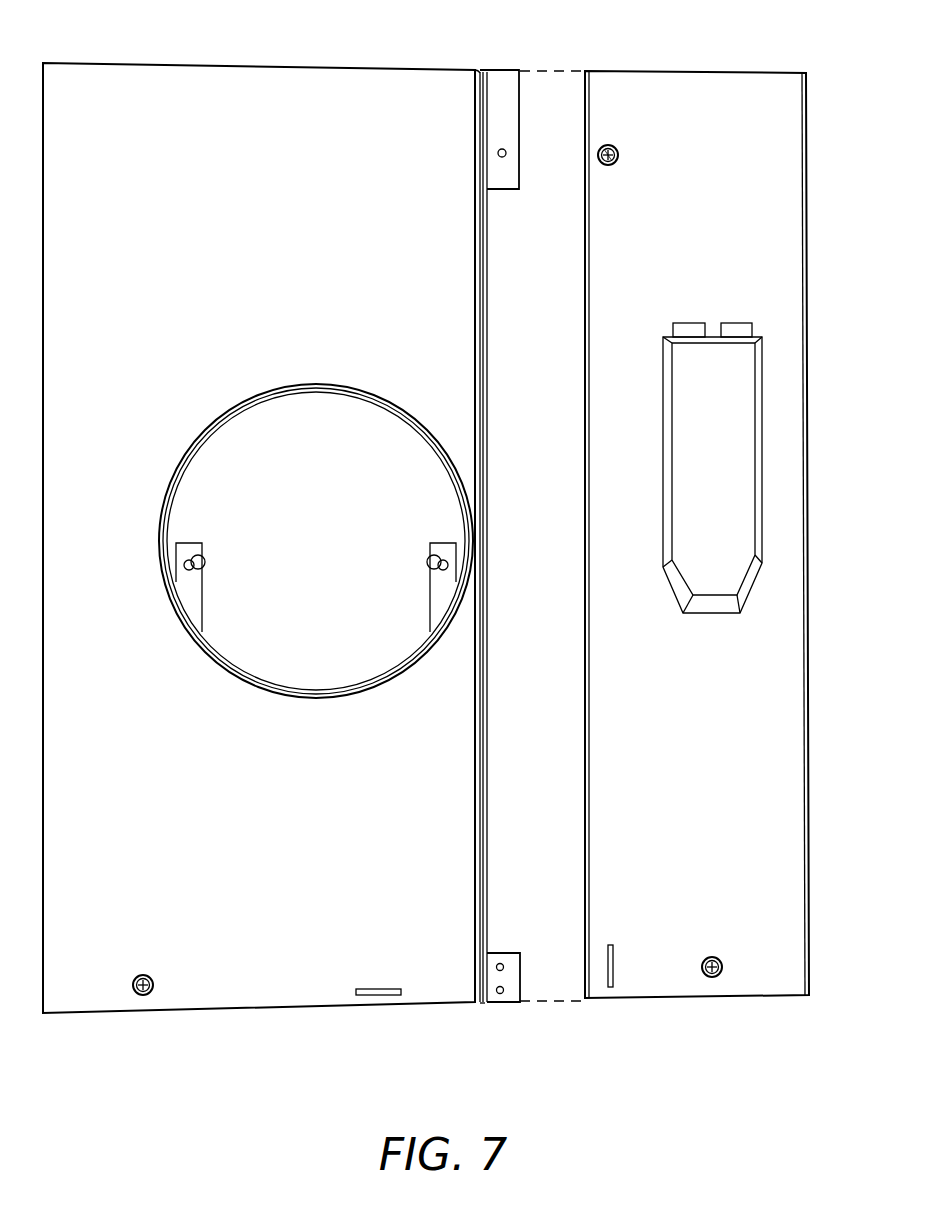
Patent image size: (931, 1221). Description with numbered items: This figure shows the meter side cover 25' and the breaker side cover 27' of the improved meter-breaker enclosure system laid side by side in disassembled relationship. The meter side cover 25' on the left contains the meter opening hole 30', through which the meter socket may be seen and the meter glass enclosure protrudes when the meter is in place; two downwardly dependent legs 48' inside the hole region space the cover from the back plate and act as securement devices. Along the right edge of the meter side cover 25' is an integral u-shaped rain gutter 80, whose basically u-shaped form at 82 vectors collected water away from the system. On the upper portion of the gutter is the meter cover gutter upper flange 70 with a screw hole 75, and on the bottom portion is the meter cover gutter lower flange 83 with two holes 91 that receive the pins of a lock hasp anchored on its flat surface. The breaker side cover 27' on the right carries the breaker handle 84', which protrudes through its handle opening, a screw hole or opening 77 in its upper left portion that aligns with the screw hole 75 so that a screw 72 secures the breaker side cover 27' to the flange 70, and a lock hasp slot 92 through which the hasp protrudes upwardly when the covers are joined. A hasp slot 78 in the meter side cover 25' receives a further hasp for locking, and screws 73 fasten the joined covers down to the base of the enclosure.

The meter side cover 25' is at (259, 564).
The breaker side cover 27' is at (731, 534).
The meter opening hole 30' is at (316, 510).
The downwardly dependent legs 48' is at (316, 587).
The meter cover gutter upper flange 70 is at (505, 90).
The screw 72 is at (619, 155).
The screws 73 is at (141, 996).
The screw hole 75 is at (508, 156).
The screw hole or opening 77 is at (604, 146).
The hasp slot 78 is at (372, 995).
The u-shaped rain gutter 80 is at (487, 760).
The u-shaped gutter portion 82 is at (485, 1003).
The meter cover gutter lower flange 83 is at (514, 988).
The breaker handle 84' is at (766, 468).
The holes or openings 91 is at (504, 989).
The meter cover to breaker cover lock hasp slot 92 is at (615, 960).